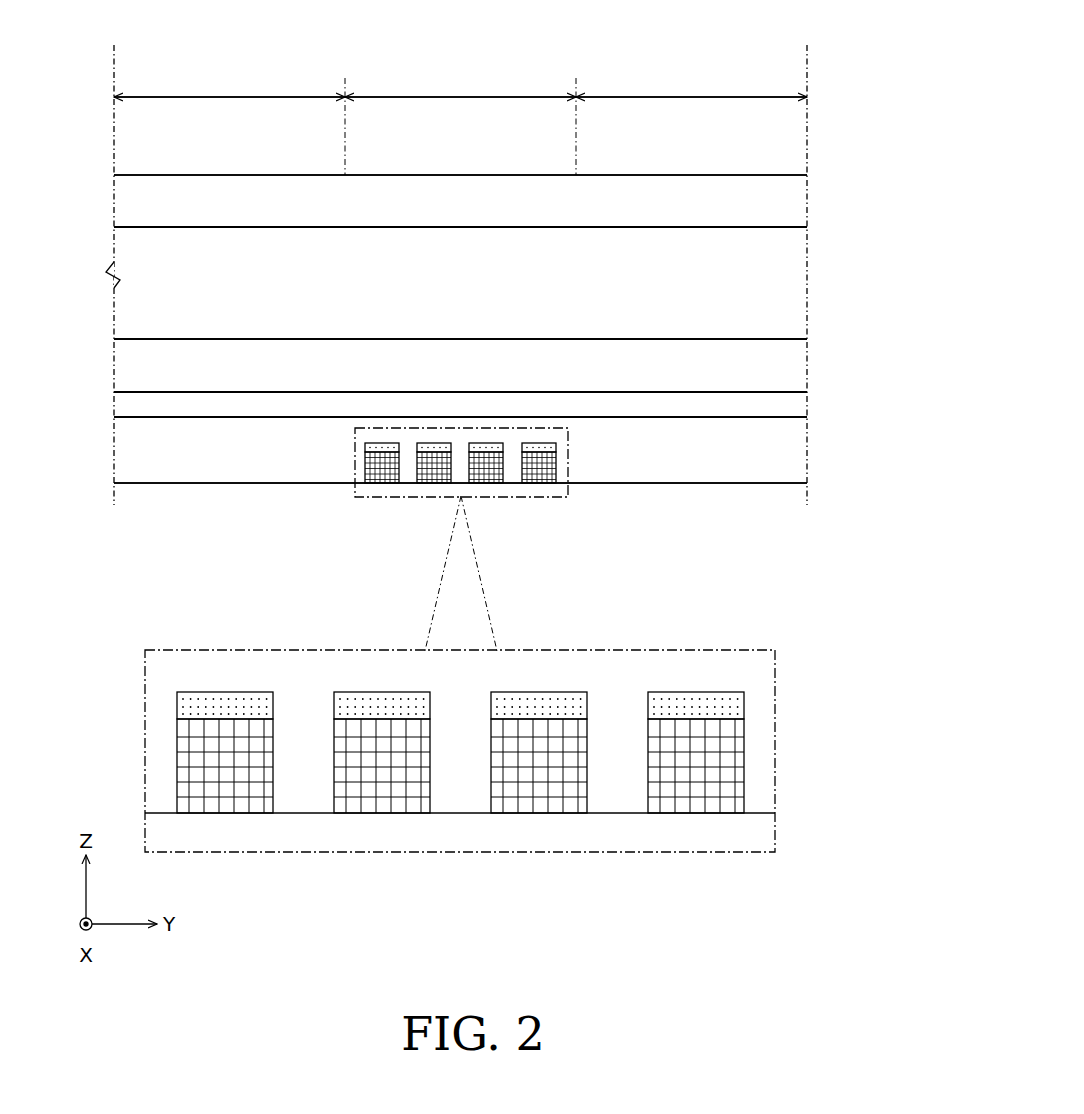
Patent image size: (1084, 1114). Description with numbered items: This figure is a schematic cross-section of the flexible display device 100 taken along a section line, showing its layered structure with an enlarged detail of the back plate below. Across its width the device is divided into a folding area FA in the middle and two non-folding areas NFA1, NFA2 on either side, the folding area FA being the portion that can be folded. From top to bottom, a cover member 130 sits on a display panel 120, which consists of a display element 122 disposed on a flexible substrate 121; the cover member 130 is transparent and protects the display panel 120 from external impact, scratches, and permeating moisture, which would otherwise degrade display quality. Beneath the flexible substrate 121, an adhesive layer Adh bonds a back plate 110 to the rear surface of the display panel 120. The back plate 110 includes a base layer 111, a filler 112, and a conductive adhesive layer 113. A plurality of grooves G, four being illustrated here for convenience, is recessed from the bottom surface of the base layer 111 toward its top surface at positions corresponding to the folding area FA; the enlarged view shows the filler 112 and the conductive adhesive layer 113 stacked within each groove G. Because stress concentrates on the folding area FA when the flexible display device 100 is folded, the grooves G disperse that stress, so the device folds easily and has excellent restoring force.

The flexible display device 100 is at (779, 25).
The cover member 130 is at (786, 206).
The display element 122 is at (788, 280).
The flexible substrate 121 is at (788, 366).
The display panel 120 is at (872, 272).
The adhesive layer Adh is at (788, 404).
The back plate 110 is at (513, 565).
The base layer 111 is at (638, 470).
The filler 112 is at (546, 470).
The conductive adhesive layer 113 is at (535, 478).
The groove G is at (745, 732).
The non-folding area NFA1 is at (229, 83).
The folding area FA is at (460, 122).
The non-folding area NFA2 is at (691, 83).